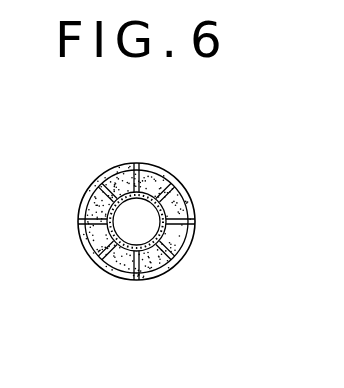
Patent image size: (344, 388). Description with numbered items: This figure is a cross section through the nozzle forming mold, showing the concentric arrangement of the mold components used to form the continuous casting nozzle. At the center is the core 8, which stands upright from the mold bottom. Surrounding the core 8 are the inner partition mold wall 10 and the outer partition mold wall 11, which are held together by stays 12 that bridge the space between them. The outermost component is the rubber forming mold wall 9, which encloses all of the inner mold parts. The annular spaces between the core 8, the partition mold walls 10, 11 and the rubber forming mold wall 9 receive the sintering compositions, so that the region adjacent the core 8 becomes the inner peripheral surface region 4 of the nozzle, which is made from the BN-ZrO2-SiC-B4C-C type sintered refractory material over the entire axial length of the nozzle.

The inner peripheral surface region 4 is at (185, 250).
The core 8 is at (182, 183).
The rubber forming mold wall 9 is at (85, 203).
The inner partition mold wall 10 is at (121, 276).
The outer partition mold wall 11 is at (85, 258).
The stays 12 is at (183, 220).